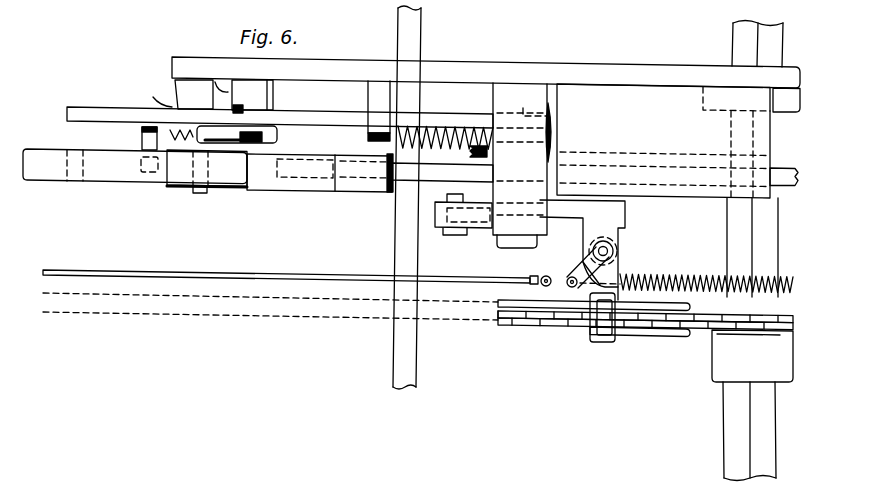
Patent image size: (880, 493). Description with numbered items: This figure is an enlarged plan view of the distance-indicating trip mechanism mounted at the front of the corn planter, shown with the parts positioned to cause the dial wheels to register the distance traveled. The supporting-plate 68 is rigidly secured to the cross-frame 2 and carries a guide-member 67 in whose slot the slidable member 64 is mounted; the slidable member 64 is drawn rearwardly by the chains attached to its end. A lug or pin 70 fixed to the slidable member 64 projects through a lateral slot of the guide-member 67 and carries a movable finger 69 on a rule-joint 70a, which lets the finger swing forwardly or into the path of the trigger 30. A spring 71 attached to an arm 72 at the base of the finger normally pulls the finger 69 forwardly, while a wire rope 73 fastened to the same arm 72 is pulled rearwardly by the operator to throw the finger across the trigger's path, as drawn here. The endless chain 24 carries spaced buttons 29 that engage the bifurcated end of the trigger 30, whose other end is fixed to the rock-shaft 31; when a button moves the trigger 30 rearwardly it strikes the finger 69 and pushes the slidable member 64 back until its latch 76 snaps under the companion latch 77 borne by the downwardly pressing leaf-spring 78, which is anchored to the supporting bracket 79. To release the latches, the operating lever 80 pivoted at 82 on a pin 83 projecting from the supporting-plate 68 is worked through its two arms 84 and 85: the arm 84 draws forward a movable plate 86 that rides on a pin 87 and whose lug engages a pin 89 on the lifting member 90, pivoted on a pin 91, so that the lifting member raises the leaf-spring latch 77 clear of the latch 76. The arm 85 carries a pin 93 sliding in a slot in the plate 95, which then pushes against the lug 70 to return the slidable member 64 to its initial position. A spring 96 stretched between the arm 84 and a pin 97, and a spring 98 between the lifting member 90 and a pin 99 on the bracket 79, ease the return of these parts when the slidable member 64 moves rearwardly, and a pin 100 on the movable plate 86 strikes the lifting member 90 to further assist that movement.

The cross-frame 2 is at (400, 360).
The endless chain 24 is at (510, 323).
The buttons 29 is at (590, 306).
The trigger 30 is at (627, 336).
The rock-shaft 31 is at (737, 408).
The slidable member 64 is at (790, 168).
The guide-member 67 is at (663, 141).
The supporting-plate 68 is at (520, 72).
The movable finger 69 is at (617, 270).
The lug or pin 70 is at (622, 230).
The rule-joint 70a is at (620, 247).
The spring 71 is at (702, 278).
The arm 72 is at (578, 259).
The wire rope 73 is at (291, 277).
The latch 76 is at (433, 171).
The companion latch 77 is at (347, 189).
The leaf-spring 78 is at (113, 163).
The supporting bracket 79 is at (390, 193).
The operating lever 80 is at (482, 152).
The pivot 82 is at (517, 233).
The pin 83 is at (480, 228).
The arm 84 is at (552, 136).
The arm 85 is at (450, 281).
The movable plate 86 is at (107, 115).
The pin 87 is at (152, 92).
The pin 89 is at (241, 110).
The lifting member 90 is at (222, 135).
The pin 91 is at (234, 102).
The pin 93 is at (452, 233).
The plate 95 is at (578, 211).
The spring 96 is at (452, 130).
The pin 97 is at (377, 98).
The spring 98 is at (172, 132).
The pin 99 is at (143, 142).
The pin 100 is at (265, 134).